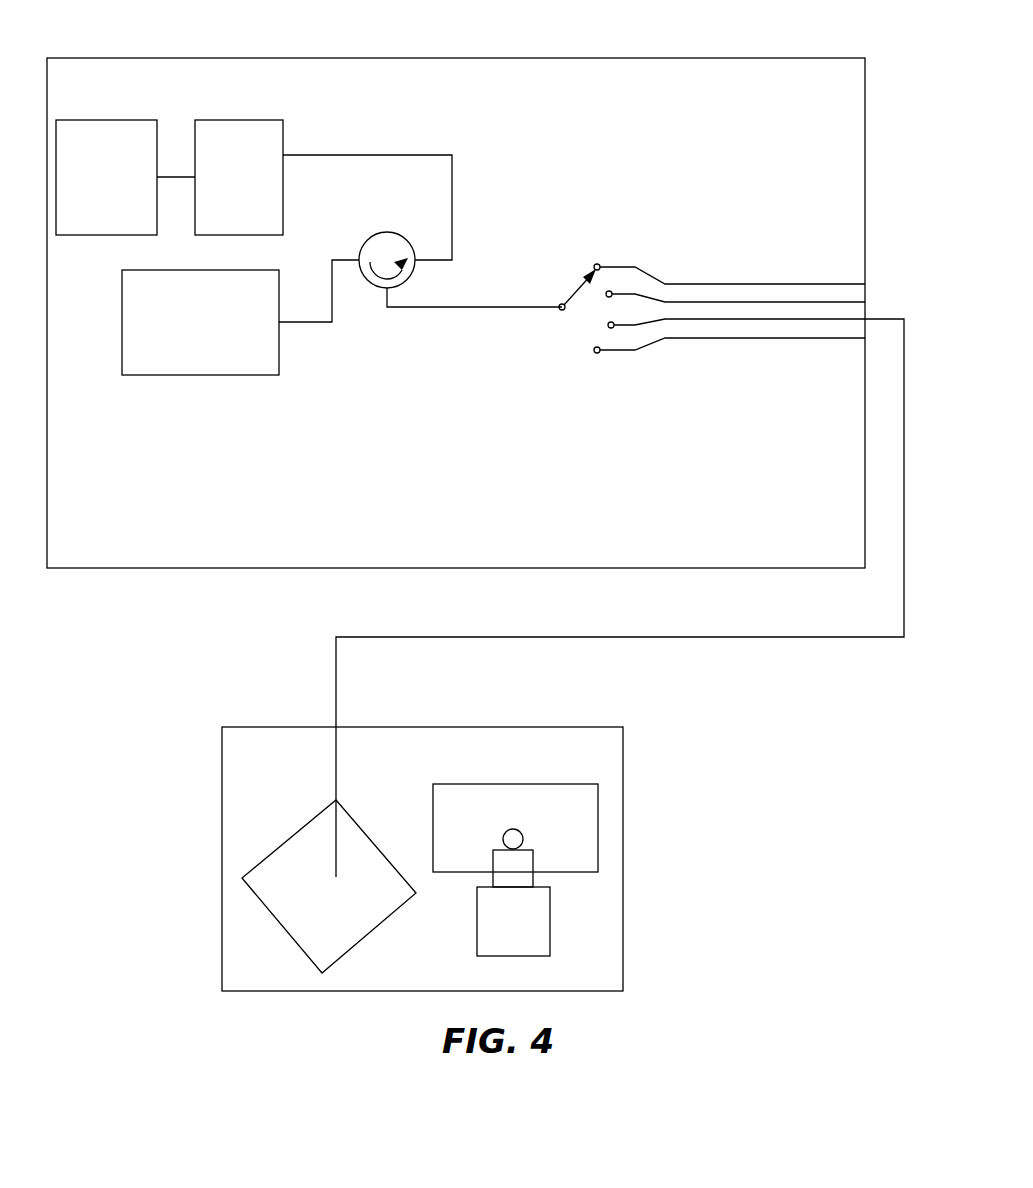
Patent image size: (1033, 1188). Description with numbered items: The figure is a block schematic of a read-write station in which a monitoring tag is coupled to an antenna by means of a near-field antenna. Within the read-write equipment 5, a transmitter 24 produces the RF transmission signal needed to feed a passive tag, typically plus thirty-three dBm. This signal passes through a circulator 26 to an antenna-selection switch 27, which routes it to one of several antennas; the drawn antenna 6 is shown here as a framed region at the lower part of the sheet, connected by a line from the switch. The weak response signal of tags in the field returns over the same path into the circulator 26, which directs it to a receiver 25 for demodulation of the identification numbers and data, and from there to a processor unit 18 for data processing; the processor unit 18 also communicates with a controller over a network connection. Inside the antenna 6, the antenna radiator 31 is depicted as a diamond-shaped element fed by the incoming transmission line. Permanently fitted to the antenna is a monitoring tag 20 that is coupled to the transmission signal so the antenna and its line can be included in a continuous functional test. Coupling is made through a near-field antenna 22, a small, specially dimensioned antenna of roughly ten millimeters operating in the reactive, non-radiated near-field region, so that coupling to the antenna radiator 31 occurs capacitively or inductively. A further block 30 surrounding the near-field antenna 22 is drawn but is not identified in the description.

The read-write equipment 5 is at (456, 301).
The processor unit 18 is at (106, 166).
The receiver 25 is at (239, 166).
The transmitter 24 is at (200, 313).
The circulator 26 is at (390, 233).
The antenna-selection switch 27 is at (572, 296).
The antenna 6 is at (422, 848).
The antenna radiator 31 is at (357, 810).
The display / item 30 is at (515, 817).
The near-field antenna 22 is at (523, 840).
The monitoring tag 20 is at (477, 908).